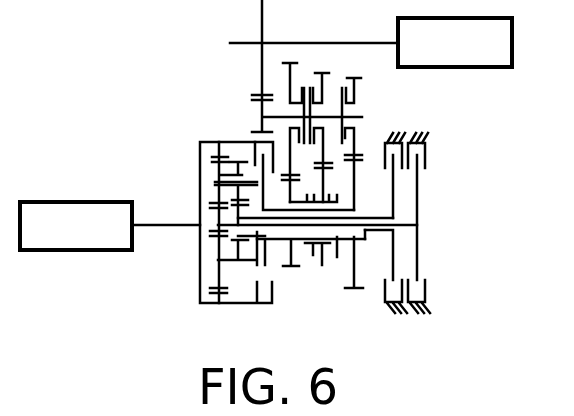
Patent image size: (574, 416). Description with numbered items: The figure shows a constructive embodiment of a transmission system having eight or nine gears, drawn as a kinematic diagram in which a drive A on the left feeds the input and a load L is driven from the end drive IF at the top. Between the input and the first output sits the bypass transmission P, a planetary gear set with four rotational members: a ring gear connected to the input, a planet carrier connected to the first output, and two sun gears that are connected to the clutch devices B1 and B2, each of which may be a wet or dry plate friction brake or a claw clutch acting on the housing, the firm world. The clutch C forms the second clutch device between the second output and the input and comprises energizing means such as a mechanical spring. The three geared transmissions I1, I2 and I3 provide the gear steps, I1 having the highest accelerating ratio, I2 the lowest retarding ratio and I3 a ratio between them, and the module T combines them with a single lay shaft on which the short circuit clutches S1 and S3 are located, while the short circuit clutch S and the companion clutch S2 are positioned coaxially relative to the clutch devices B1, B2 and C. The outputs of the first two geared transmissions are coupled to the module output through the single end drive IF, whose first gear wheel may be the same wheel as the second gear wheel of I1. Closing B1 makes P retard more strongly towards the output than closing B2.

The end drive IF is at (308, 66).
The load L is at (455, 42).
The drive unit (motor) A is at (110, 226).
The bypass transmission P is at (210, 273).
The short circuit clutch S1 is at (345, 80).
The second shift element S2 is at (302, 80).
The short circuit clutch S3 is at (312, 80).
The clutch C is at (263, 282).
The short circuit clutch S is at (307, 244).
The geared transmission I1 is at (351, 275).
The geared transmission I2 is at (311, 272).
The geared transmission I3 is at (317, 279).
The first clutch device B1 is at (388, 244).
The third clutch device B2 is at (432, 244).
The transmission T is at (285, 408).